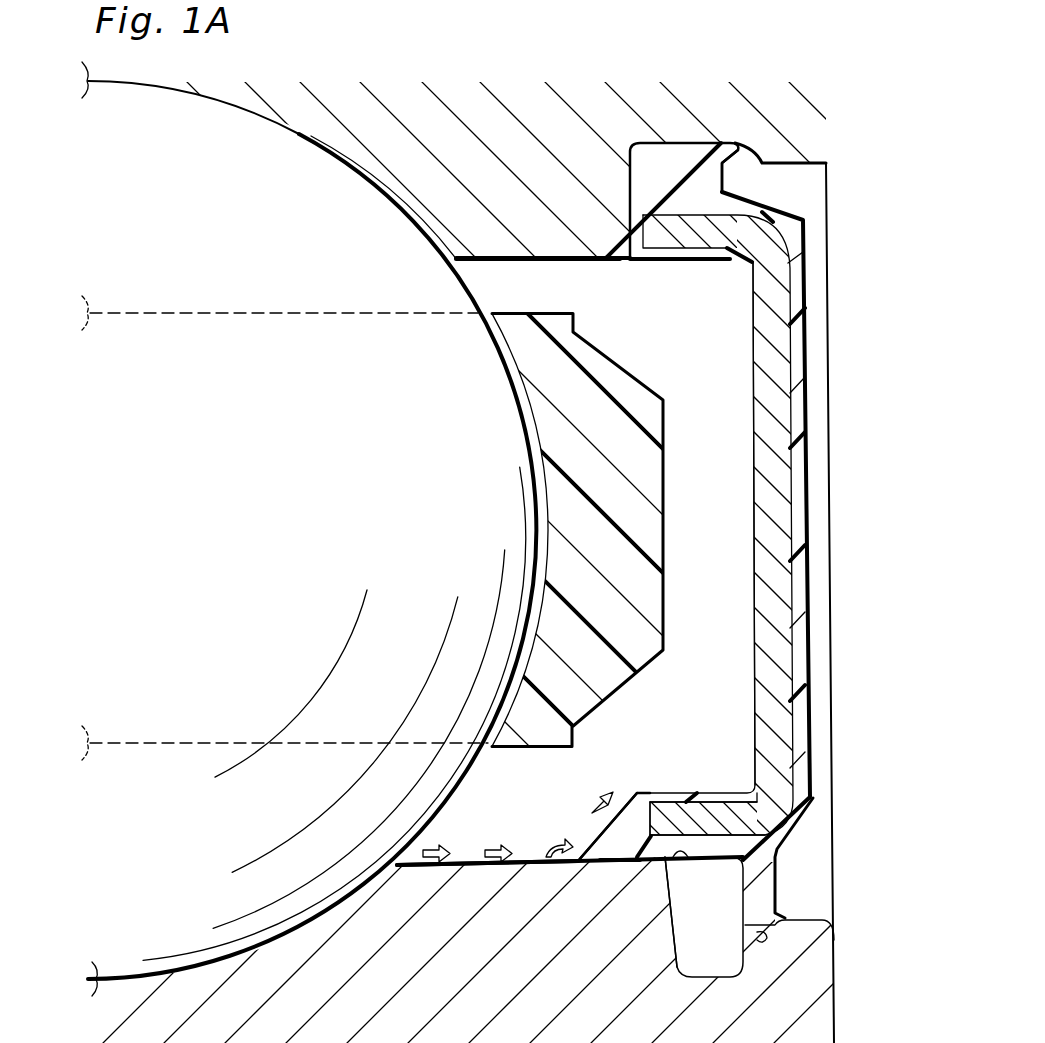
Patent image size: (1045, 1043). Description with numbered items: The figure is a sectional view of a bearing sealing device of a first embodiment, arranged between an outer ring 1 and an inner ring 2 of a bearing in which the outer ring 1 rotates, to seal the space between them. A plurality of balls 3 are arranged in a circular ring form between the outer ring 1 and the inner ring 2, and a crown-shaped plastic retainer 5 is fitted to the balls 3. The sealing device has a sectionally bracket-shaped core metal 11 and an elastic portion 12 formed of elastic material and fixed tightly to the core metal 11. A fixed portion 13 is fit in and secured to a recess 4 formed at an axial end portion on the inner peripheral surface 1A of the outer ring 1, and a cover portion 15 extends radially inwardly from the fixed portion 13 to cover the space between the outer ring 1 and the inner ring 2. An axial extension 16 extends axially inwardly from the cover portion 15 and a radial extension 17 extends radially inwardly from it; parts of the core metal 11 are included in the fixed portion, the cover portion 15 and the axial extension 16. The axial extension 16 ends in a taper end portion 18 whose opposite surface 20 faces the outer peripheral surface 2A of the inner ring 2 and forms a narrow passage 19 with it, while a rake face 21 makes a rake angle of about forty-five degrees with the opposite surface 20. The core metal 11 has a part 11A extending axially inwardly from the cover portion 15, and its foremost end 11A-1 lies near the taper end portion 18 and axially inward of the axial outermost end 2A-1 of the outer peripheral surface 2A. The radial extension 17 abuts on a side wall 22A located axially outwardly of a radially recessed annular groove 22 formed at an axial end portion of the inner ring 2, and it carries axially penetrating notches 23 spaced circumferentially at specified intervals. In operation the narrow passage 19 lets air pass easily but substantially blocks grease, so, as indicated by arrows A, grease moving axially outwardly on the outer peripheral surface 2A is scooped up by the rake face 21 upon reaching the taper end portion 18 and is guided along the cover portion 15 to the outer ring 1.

The outer ring 1 is at (518, 113).
The inner peripheral surface 1A is at (515, 260).
The inner ring 2 is at (502, 954).
The outer peripheral surface 2A is at (470, 863).
The axial outermost end 2A-1 is at (670, 907).
The balls 3 is at (254, 247).
The recess 4 is at (653, 143).
The crown-shaped plastic retainer 5 is at (617, 362).
The core metal 11 is at (757, 289).
The part of core metal 11A is at (720, 815).
The foremost end 11A-1 is at (652, 795).
The elastic portion 12 is at (792, 342).
The fixed portion 13 is at (703, 182).
The cover portion 15 is at (754, 392).
The axial extension 16 is at (672, 792).
The radial extension 17 is at (775, 866).
The taper end portion 18 is at (614, 840).
The narrow passage 19 is at (597, 864).
The opposite surface 20 is at (643, 860).
The rake face 21 is at (593, 833).
The annular groove 22 is at (708, 977).
The side wall 22A is at (765, 937).
The notches 23 is at (760, 942).
The arrows A is at (490, 845).